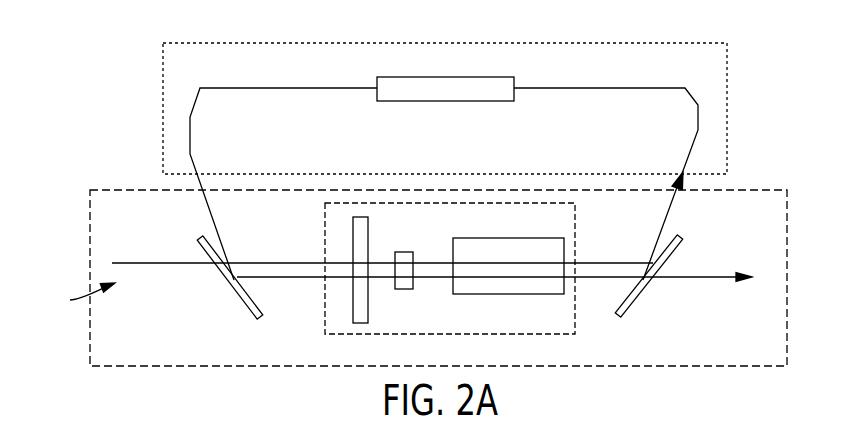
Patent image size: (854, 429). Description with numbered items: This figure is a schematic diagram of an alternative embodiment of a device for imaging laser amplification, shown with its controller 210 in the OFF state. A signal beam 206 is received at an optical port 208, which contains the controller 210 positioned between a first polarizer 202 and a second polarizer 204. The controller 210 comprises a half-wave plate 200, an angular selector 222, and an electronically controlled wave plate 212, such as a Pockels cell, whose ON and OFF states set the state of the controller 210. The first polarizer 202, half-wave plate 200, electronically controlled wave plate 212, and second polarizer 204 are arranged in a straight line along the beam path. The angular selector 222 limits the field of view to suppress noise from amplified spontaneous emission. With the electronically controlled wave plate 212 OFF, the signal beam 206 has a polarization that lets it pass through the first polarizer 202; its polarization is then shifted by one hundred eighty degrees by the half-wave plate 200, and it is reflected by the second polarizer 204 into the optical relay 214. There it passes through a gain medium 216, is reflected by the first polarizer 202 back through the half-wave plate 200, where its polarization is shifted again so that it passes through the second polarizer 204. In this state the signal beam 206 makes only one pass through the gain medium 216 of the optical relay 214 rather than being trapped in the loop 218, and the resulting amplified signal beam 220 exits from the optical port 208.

The half-wave plate 200 is at (369, 305).
The first polarizer 202 is at (237, 292).
The second polarizer 204 is at (640, 297).
The signal beam 206 is at (153, 265).
The optical port 208 is at (77, 297).
The controller 210 is at (565, 225).
The electronically controlled wave plate 212 is at (525, 287).
The optical relay 214 is at (687, 53).
The gain medium 216 is at (450, 77).
The loop 218 is at (483, 184).
The amplified signal beam 220 is at (705, 278).
The angular selector 222 is at (403, 282).